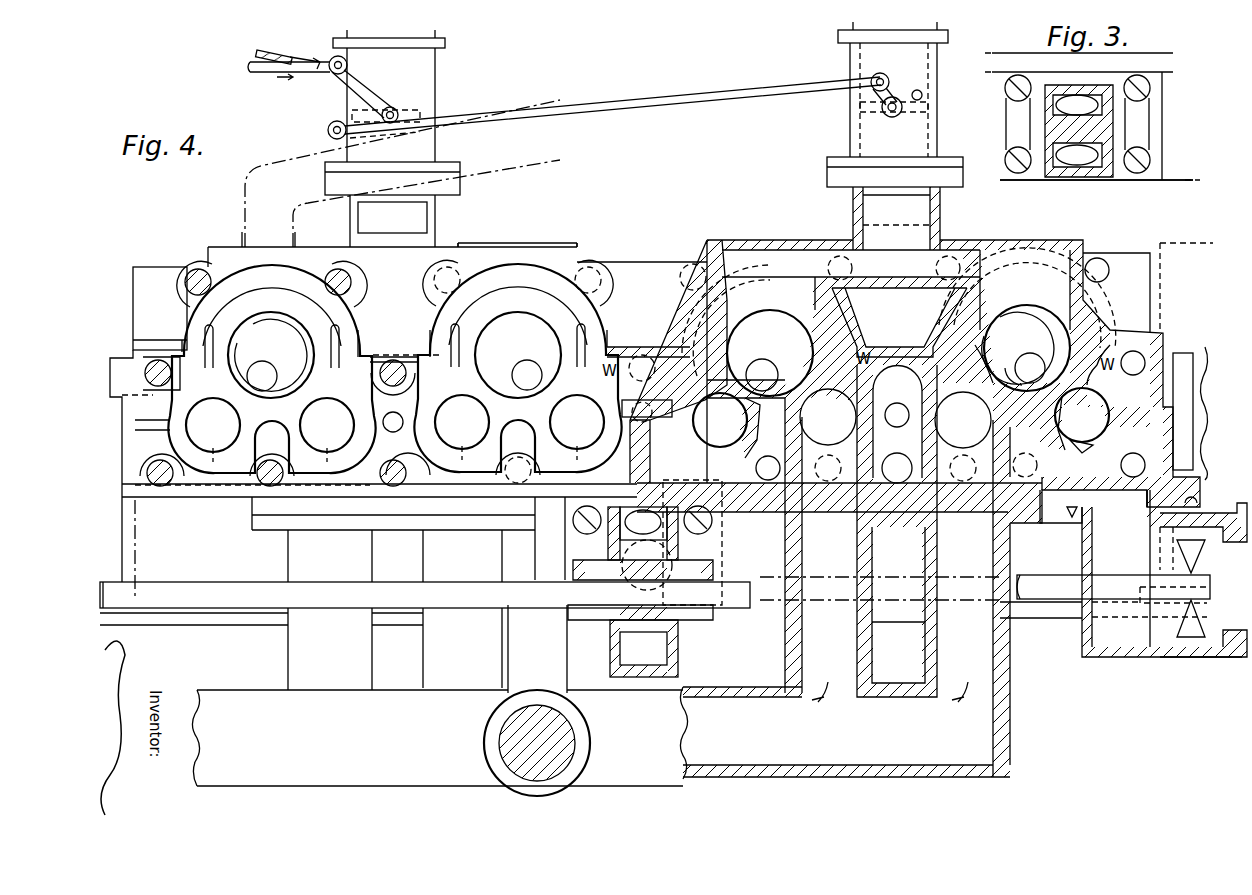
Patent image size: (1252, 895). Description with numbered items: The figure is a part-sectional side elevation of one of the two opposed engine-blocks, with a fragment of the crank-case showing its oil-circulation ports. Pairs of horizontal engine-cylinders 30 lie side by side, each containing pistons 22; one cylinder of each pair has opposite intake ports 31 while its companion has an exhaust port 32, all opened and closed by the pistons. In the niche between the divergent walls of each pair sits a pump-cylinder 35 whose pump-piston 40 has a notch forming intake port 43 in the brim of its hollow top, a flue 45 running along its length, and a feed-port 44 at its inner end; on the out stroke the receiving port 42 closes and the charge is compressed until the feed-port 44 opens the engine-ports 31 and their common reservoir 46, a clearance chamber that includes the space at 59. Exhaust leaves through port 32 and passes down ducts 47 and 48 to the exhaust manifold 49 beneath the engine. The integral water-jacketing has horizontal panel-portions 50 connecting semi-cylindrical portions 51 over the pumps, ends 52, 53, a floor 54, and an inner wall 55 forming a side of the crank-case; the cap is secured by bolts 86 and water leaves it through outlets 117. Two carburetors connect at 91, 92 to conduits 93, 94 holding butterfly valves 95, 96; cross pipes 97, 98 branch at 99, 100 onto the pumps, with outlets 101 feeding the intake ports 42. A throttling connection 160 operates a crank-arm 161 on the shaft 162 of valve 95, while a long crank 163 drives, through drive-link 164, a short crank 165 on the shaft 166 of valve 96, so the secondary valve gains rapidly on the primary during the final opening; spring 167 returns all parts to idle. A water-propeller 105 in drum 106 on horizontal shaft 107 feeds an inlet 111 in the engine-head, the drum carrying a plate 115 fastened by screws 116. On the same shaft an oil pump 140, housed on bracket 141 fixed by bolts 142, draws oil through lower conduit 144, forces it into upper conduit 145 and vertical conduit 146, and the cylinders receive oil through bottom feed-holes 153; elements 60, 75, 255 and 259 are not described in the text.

In FIG. 4, the piston 22 is at (647, 420).
In FIG. 4, the engine-cylinder 30 is at (597, 441).
In FIG. 4, the intake port 31 is at (901, 433).
In FIG. 4, the exhaust port 32 is at (895, 531).
In FIG. 4, the pump-cylinder 35 is at (628, 362).
In FIG. 4, the pump-piston 40 is at (649, 351).
In FIG. 4, the intake port 42 is at (738, 347).
In FIG. 4, the intake port 43 is at (641, 351).
In FIG. 4, the feed-port 44 is at (1006, 368).
In FIG. 4, the flue 45 is at (654, 363).
In FIG. 4, the reservoir 46 is at (940, 580).
In FIG. 4, the duct 47 is at (678, 465).
In FIG. 4, the duct 48 is at (542, 599).
In FIG. 4, the exhaust manifold 49 is at (469, 736).
In FIG. 4, the horizontal panel-portion 50 is at (631, 340).
In FIG. 4, the semi-cylindrical water-jacketing portion 51 is at (549, 324).
In FIG. 4, the end of the water-jacketing 52 is at (239, 473).
In FIG. 4, the end of the water-jacketing 53 is at (1186, 413).
In FIG. 4, the floor 54 is at (205, 500).
In FIG. 4, the wall 55 is at (673, 296).
In FIG. 3, the wall 55 is at (1005, 74).
In FIG. 4, the clearance chamber portion 59 is at (632, 458).
In FIG. 4, the web 60 is at (902, 427).
In FIG. 4, the casing top 75 is at (160, 250).
In FIG. 4, the bolt 86 is at (644, 371).
In FIG. 4, the carburetor connection 91 is at (440, 28).
In FIG. 4, the carburetor connection 92 is at (850, 26).
In FIG. 4, the conduit 93 is at (436, 68).
In FIG. 4, the conduit 94 is at (850, 60).
In FIG. 4, the butterfly valve 95 is at (392, 102).
In FIG. 4, the butterfly valve 96 is at (919, 111).
In FIG. 4, the cross pipe 97 is at (436, 212).
In FIG. 4, the cross pipe 98 is at (896, 210).
In FIG. 4, the branch 99 is at (470, 245).
In FIG. 4, the branch 100 is at (878, 287).
In FIG. 4, the outlet 101 is at (1083, 252).
In FIG. 4, the water-propeller 105 is at (1178, 630).
In FIG. 4, the drum 106 is at (1165, 660).
In FIG. 4, the horizontal shaft 107 is at (655, 596).
In FIG. 4, the inlet 111 is at (1164, 573).
In FIG. 4, the plate or bracket 115 is at (1203, 487).
In FIG. 4, the screw 116 is at (1200, 505).
In FIG. 4, the outlet 117 is at (245, 210).
In FIG. 4, the oil pump 140 is at (694, 630).
In FIG. 4, the bracket 141 is at (684, 533).
In FIG. 3, the bracket 141 is at (1133, 128).
In FIG. 4, the bolt 142 is at (712, 518).
In FIG. 3, the bolt 142 is at (1025, 140).
In FIG. 4, the lower conduit 144 is at (644, 648).
In FIG. 3, the lower conduit 144 is at (1095, 170).
In FIG. 4, the upper conduit 145 is at (626, 533).
In FIG. 3, the upper conduit 145 is at (1100, 108).
In FIG. 4, the vertical conduit 146 is at (689, 542).
In FIG. 4, the bottom feed-hole 153 is at (395, 450).
In FIG. 4, the throttling connection 160 is at (312, 70).
In FIG. 4, the crank-arm 161 is at (362, 87).
In FIG. 4, the shaft 162 is at (396, 103).
In FIG. 4, the long crank 163 is at (345, 118).
In FIG. 4, the drive-link 164 is at (565, 98).
In FIG. 4, the short crank 165 is at (888, 84).
In FIG. 4, the shaft 166 is at (894, 117).
In FIG. 4, the spring 167 is at (288, 48).
In FIG. 4, the arm 255 is at (537, 649).
In FIG. 4, the roller 259 is at (577, 740).